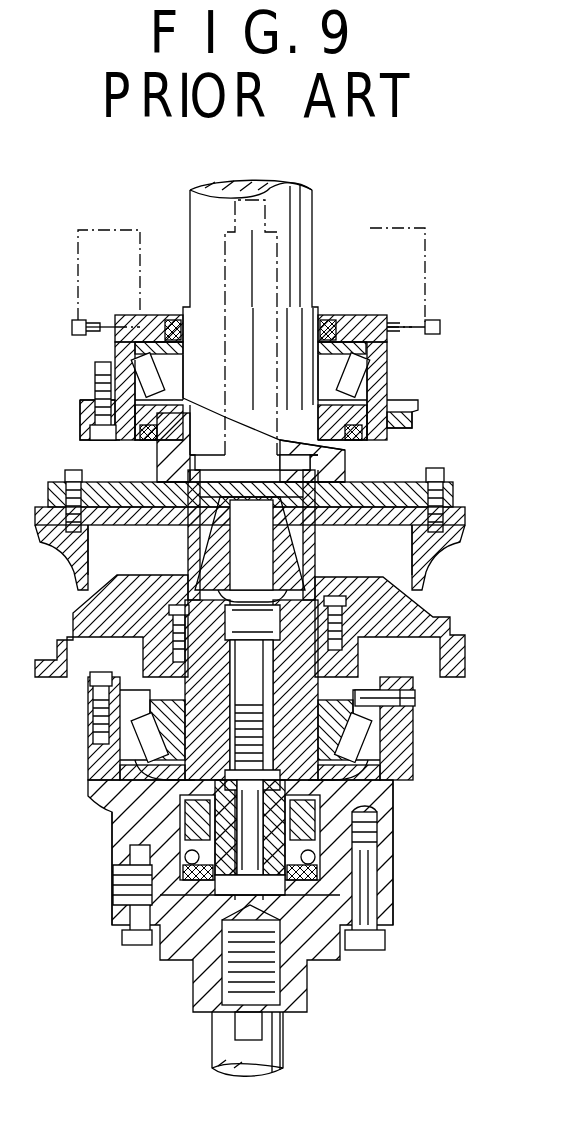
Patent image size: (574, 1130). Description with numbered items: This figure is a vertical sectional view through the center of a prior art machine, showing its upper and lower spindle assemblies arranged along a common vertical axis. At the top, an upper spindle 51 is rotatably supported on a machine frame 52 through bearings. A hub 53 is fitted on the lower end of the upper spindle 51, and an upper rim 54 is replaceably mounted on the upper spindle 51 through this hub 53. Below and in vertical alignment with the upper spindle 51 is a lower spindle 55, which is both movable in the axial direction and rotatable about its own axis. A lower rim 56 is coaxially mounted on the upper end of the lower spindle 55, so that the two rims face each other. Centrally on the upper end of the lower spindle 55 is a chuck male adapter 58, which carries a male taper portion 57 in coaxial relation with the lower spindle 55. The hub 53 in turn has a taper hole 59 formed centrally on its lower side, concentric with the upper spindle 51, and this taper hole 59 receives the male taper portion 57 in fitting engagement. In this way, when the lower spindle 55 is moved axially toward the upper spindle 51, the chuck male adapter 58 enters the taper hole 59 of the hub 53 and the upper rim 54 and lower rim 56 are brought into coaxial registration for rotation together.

The upper spindle 51 is at (312, 222).
The machine frame 52 is at (432, 320).
The hub 53 is at (401, 482).
The upper rim 54 is at (448, 525).
The lower spindle 55 is at (375, 800).
The lower rim 56 is at (460, 665).
The male taper portion 57 is at (300, 556).
The chuck male adapter 58 is at (350, 700).
The taper hole 59 is at (197, 465).